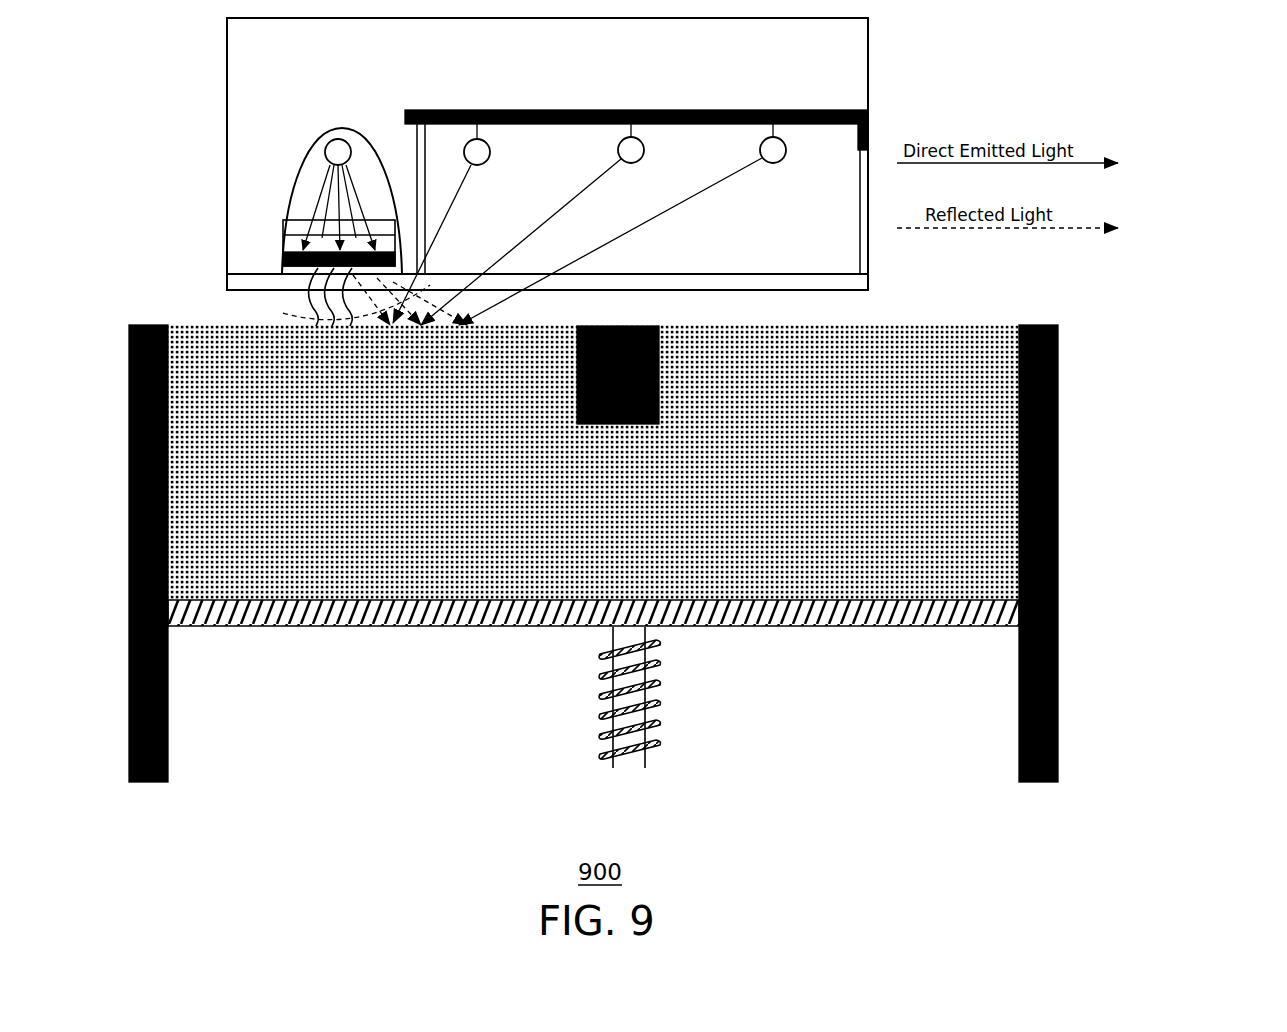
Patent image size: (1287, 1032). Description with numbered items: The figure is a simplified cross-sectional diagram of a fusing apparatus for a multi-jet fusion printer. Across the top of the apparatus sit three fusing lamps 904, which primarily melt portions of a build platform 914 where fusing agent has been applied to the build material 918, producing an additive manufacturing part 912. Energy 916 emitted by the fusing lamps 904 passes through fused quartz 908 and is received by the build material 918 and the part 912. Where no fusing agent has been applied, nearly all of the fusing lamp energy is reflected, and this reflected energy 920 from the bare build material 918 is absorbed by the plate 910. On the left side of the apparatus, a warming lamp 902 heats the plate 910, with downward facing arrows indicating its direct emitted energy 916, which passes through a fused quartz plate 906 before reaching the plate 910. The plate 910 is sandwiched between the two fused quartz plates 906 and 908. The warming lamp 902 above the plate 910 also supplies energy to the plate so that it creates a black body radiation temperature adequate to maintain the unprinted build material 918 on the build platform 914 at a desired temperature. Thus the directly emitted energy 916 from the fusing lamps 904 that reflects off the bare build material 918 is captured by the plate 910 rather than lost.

The warming lamp 902 is at (338, 127).
The fusing lamps 904 is at (477, 110).
The fused quartz plate 906 is at (290, 222).
The fused quartz 908 is at (868, 283).
The plate 910 is at (281, 258).
The additive manufacturing part 912 is at (636, 326).
The build platform 914 is at (1158, 330).
The direct emitted energy 916 is at (336, 190).
The build material 918 is at (752, 432).
The reflected energy 920 is at (326, 318).